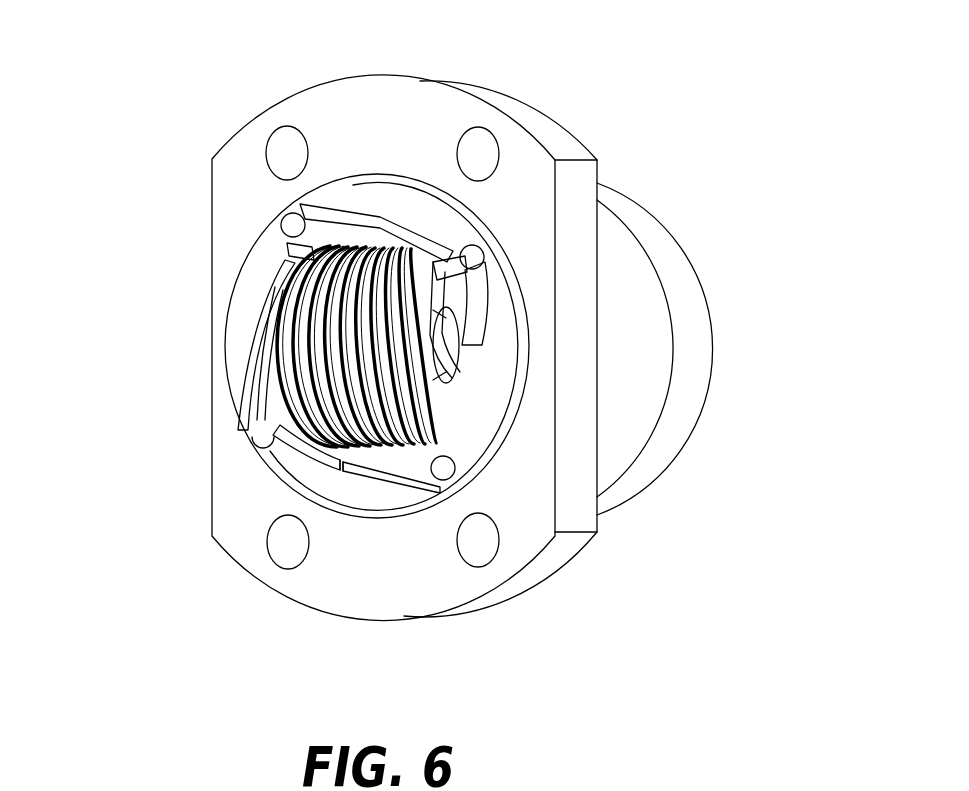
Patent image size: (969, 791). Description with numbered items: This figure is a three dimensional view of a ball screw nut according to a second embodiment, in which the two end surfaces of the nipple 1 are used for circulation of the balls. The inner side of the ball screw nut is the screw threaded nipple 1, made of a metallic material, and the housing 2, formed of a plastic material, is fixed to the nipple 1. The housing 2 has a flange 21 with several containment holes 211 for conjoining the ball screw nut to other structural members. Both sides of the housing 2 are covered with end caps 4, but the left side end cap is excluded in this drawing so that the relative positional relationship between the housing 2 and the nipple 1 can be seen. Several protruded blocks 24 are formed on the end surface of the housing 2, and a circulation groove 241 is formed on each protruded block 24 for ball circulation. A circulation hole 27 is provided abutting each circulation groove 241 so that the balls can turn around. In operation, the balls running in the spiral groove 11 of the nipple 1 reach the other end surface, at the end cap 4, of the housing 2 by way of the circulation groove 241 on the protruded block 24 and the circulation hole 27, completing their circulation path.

The nipple 1 is at (268, 406).
The spiral groove 11 is at (332, 415).
The housing 2 is at (637, 400).
The flange 21 is at (555, 130).
The containment holes 211 is at (270, 560).
The protruded block 24 is at (322, 205).
The circulation groove 241 is at (393, 465).
The circulation hole 27 is at (281, 219).
The end cap 4 is at (660, 450).